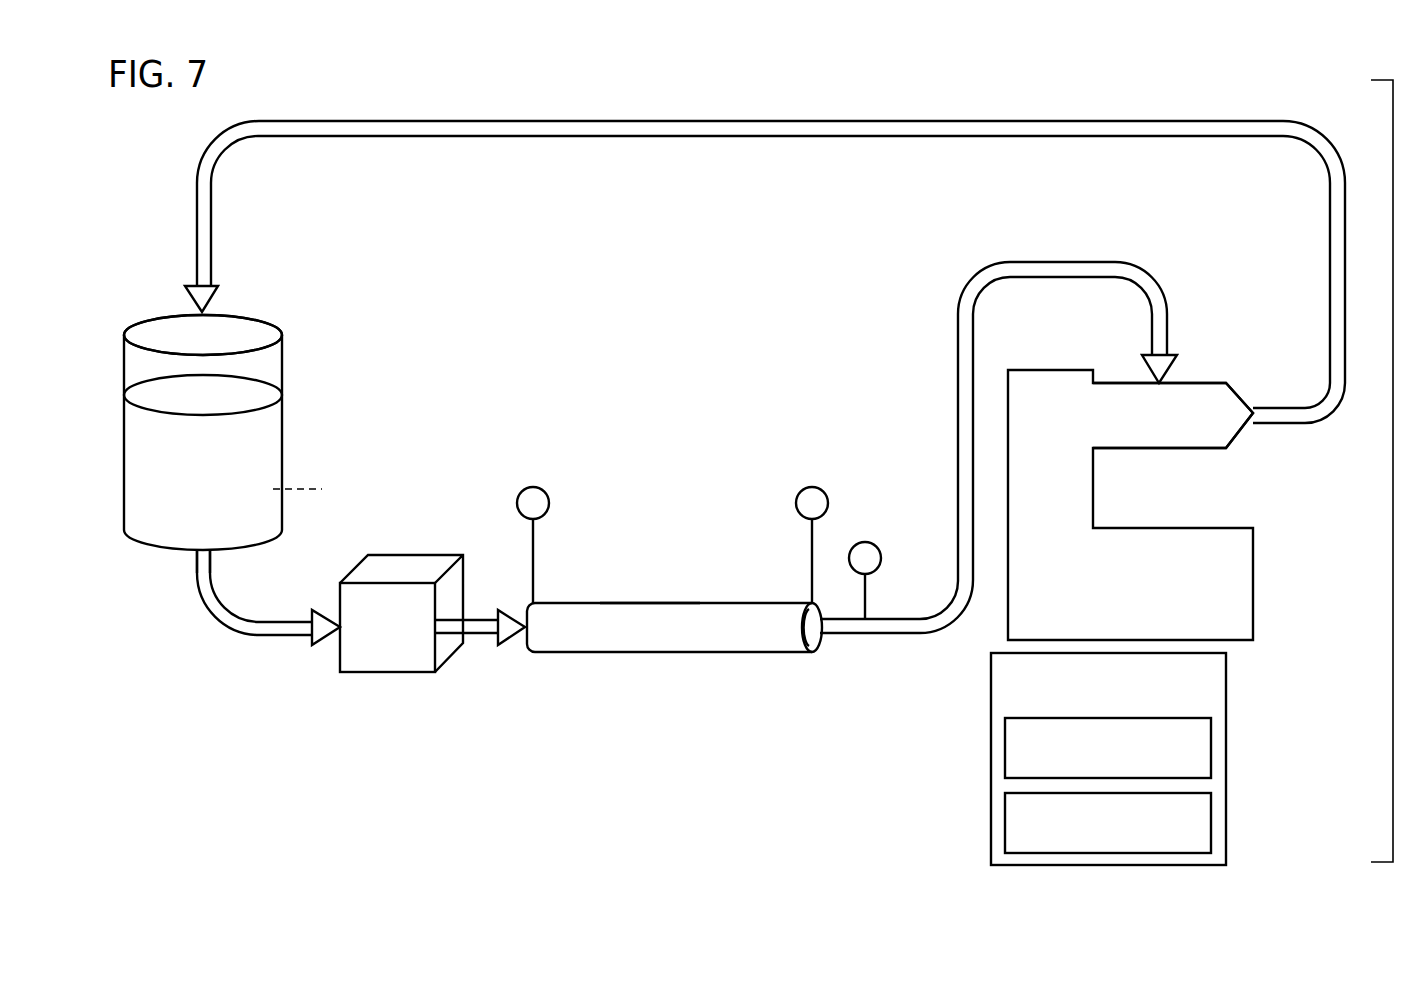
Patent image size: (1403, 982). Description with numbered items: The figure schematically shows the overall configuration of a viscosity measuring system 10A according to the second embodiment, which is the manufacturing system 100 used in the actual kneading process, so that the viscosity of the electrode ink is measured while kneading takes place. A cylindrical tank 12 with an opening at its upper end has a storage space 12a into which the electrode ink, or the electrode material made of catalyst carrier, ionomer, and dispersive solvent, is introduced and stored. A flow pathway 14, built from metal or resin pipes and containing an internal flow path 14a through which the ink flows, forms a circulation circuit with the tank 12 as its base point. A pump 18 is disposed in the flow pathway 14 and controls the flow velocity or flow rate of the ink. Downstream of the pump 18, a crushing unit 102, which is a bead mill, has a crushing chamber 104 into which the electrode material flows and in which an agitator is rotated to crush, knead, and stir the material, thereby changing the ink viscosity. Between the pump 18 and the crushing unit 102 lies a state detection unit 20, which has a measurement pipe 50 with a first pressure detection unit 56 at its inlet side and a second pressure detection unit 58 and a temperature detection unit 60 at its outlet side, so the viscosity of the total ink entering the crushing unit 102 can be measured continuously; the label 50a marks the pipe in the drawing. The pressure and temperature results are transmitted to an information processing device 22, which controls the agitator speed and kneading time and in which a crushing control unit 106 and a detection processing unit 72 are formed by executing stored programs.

The viscosity measuring system 10A is at (512, 92).
The manufacturing system 100 is at (573, 92).
The tank 12 is at (330, 332).
The storage space 12a is at (273, 370).
The flow pathway 14 is at (198, 625).
The flow path 14a is at (205, 578).
The pump 18 is at (375, 677).
The state detection unit 20 is at (852, 457).
The measurement pipe 50 is at (680, 603).
The tube wall 50a is at (625, 620).
The first pressure detection unit 56 is at (535, 487).
The second pressure detection unit 58 is at (813, 487).
The temperature detection unit 60 is at (866, 541).
The crushing unit 102 is at (1262, 570).
The crushing chamber 104 is at (1193, 413).
The information processing device 22 is at (1226, 697).
The crushing control unit 106 is at (1211, 748).
The detection processing unit 72 is at (1211, 823).